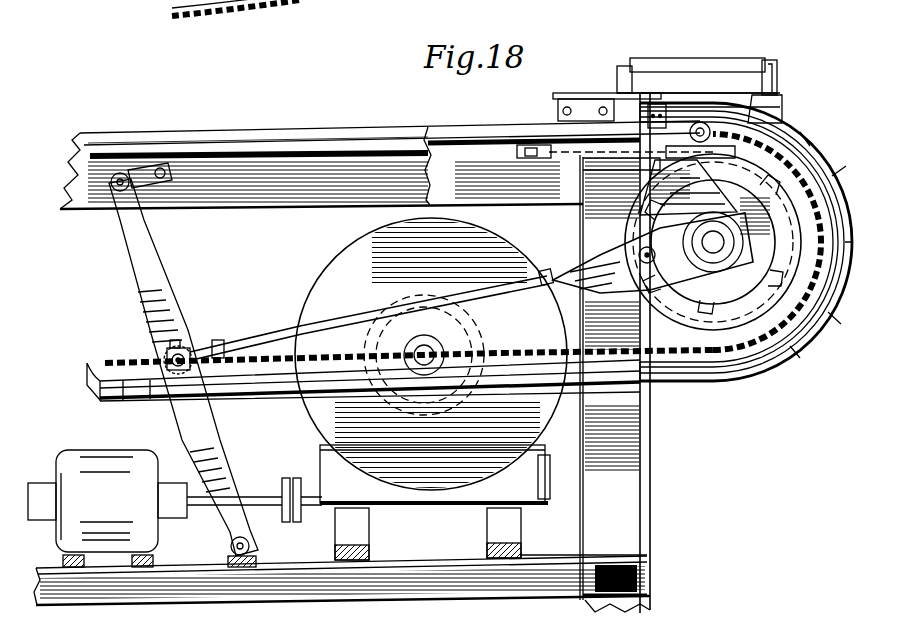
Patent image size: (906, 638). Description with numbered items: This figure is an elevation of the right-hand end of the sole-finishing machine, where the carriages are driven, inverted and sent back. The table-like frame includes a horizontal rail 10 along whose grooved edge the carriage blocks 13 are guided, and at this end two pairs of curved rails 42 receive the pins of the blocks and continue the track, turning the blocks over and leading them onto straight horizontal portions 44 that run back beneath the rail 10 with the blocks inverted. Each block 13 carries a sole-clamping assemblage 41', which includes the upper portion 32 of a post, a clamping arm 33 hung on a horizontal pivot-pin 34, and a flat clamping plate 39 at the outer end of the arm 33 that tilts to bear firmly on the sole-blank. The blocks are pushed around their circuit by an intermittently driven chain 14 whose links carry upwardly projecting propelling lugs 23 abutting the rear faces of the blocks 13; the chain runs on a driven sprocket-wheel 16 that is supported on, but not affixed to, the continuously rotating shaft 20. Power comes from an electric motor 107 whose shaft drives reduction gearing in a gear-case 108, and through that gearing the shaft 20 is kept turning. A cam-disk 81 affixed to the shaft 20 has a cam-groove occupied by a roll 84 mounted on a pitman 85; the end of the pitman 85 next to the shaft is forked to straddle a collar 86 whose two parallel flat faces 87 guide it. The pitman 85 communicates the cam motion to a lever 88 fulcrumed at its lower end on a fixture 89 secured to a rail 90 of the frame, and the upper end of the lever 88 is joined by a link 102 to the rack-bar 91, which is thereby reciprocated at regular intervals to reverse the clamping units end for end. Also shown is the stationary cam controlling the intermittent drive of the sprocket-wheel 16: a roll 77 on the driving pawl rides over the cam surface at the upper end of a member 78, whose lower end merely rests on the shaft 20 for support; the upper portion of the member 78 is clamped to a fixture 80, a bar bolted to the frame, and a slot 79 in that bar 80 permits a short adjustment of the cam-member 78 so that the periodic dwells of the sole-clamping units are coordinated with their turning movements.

The horizontal rail 10 is at (213, 130).
The carriage block 13 is at (556, 109).
The intermittently driven chain 14 is at (522, 346).
The driven sprocket-wheel 16 is at (170, 6).
The continuously driven shaft 20 is at (760, 211).
The propelling lug 23 is at (238, 334).
The upper portion of post 32 is at (781, 78).
The clamping arm 33 is at (706, 60).
The horizontal pivot-pin 34 is at (781, 62).
The flat clamping plate 39 is at (590, 93).
The sole-clamping assemblage 41' is at (532, 113).
The curved rail 42 is at (808, 139).
The straight horizontal track portion 44 is at (100, 381).
The roll 77 is at (704, 123).
The cam member 78 is at (727, 171).
The slot 79 is at (781, 92).
The fixture bar 80 is at (616, 150).
The cam-disk 81 is at (790, 368).
The roll 84 is at (600, 198).
The pitman 85 is at (356, 318).
The collar 86 is at (700, 310).
The flat faces 87 is at (580, 197).
The lever 88 is at (160, 336).
The fixture 89 is at (256, 549).
The rail 90 is at (272, 600).
The rack-bar 91 is at (305, 150).
The link 102 is at (165, 210).
The electric motor 107 is at (80, 460).
The gear-case 108 is at (330, 278).